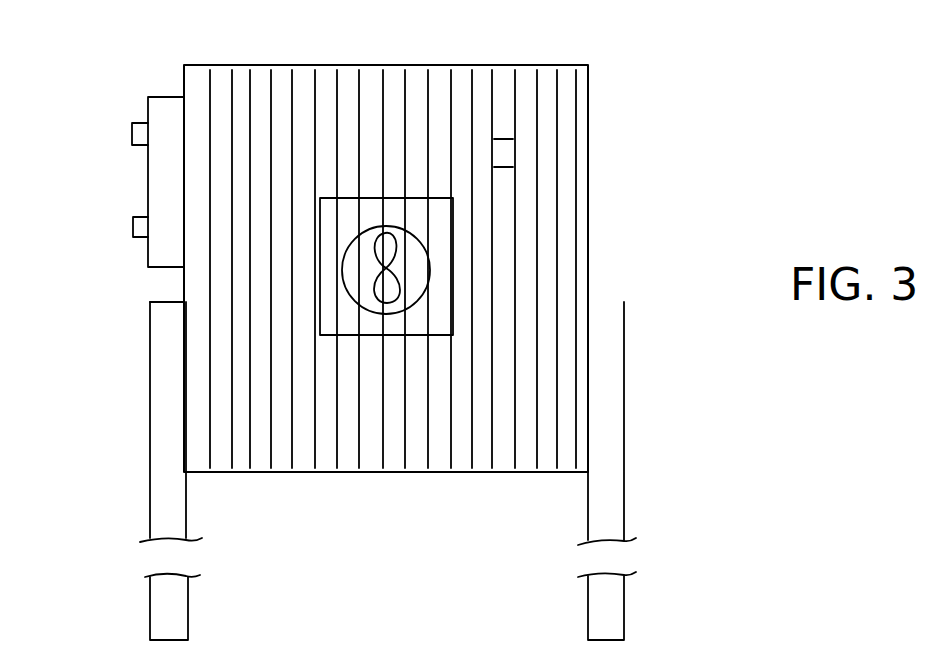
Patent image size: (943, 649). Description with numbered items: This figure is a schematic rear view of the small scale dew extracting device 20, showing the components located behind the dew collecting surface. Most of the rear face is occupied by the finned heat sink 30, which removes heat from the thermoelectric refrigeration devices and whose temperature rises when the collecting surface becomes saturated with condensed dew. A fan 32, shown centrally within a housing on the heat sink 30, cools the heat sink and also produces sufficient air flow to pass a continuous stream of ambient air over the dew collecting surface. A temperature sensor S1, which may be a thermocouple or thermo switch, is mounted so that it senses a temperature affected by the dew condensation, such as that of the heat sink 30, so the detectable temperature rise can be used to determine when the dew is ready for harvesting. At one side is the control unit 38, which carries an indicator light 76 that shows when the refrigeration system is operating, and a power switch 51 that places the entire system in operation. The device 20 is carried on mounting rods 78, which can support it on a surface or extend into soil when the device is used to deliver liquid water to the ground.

The dew extracting device 20 is at (693, 112).
The heat sink 30 is at (555, 212).
The fan 32 is at (392, 287).
The temperature sensor S1 is at (507, 153).
The control unit 38 is at (163, 96).
The indicator light 76 is at (132, 137).
The power switch 51 is at (133, 228).
The mounting rods 78 is at (156, 505).